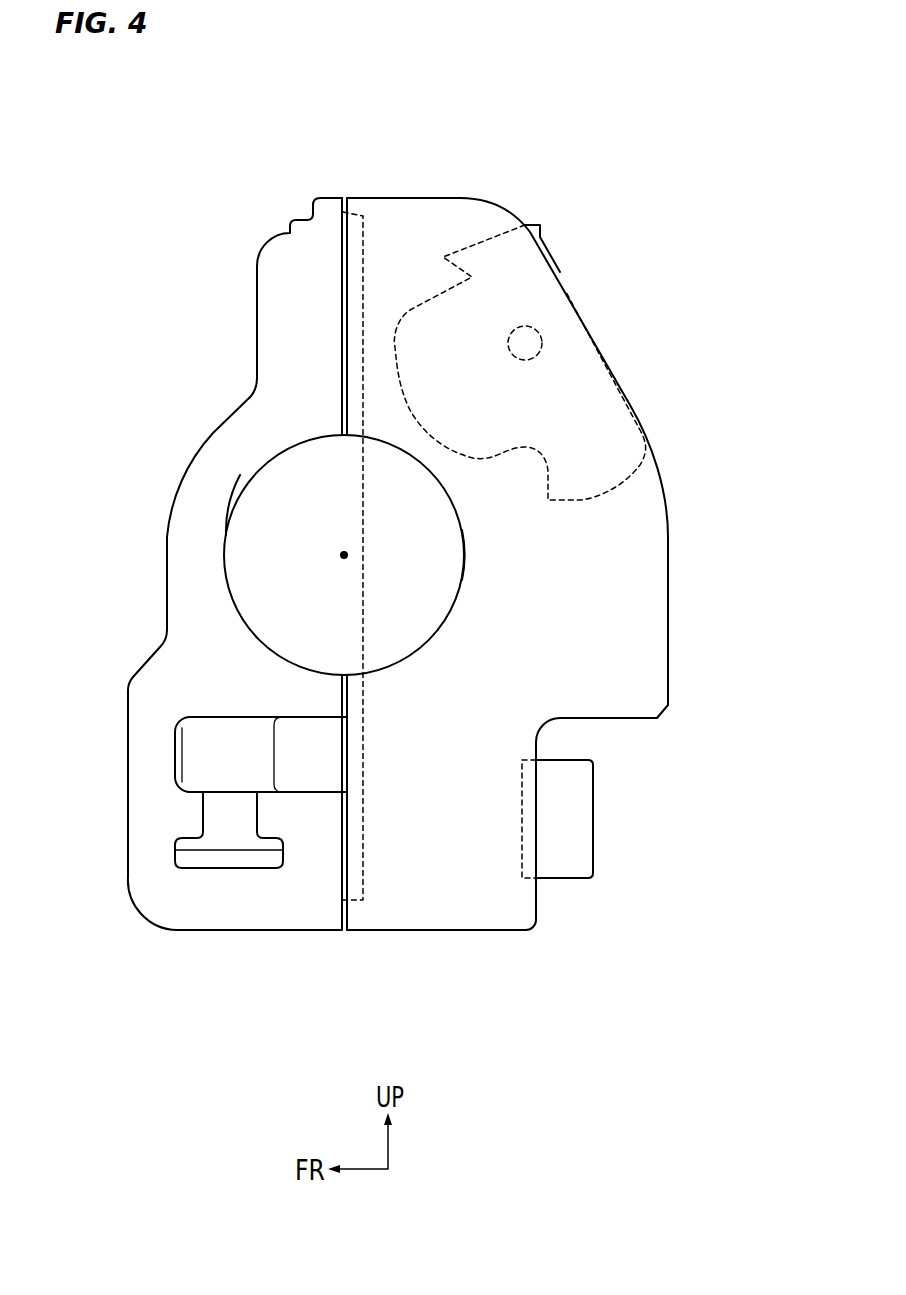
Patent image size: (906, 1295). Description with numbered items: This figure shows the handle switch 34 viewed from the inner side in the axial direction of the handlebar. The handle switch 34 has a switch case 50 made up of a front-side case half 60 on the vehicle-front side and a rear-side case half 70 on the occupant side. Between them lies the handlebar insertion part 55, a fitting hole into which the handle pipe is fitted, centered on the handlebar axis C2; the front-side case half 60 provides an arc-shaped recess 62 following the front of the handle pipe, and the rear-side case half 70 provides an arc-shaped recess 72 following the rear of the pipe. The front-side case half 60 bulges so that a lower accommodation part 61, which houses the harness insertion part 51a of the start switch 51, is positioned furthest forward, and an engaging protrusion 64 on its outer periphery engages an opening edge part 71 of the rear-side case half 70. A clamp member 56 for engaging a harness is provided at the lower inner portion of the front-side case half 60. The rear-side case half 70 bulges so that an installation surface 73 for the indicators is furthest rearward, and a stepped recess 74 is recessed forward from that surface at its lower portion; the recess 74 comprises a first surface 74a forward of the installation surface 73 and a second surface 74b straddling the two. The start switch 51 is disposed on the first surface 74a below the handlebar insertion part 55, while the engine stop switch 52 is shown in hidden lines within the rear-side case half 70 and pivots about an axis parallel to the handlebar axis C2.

The handle switch 34 is at (647, 162).
The switch case 50 is at (255, 318).
The start switch 51 is at (585, 833).
The harness insertion part 51a is at (197, 763).
The engine stop switch 52 is at (630, 405).
The handlebar insertion part 55 is at (223, 538).
The clamp member 56 is at (233, 860).
The front-side case half 60 is at (212, 432).
The lower accommodation part 61 is at (145, 870).
The arc-shaped recess 62 is at (237, 505).
The engaging protrusion 64 is at (360, 255).
The rear-side case half 70 is at (500, 205).
The opening edge part 71 is at (333, 197).
The arc-shaped recess 72 is at (462, 567).
The installation surface 73 is at (670, 630).
The recess 74 is at (630, 752).
The first surface 74a is at (537, 888).
The second surface 74b is at (637, 720).
The handlebar axis C2 is at (340, 555).